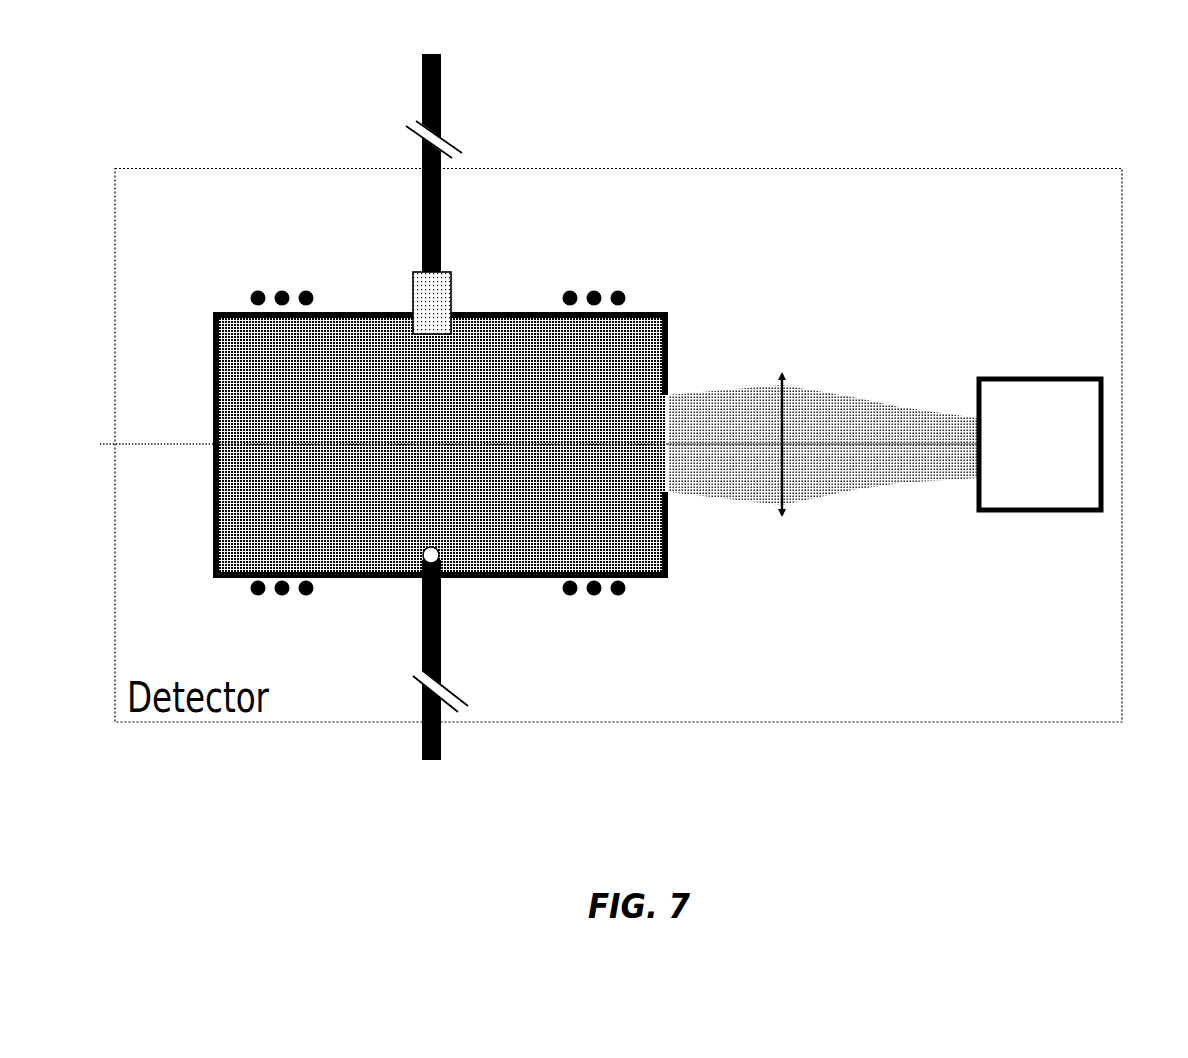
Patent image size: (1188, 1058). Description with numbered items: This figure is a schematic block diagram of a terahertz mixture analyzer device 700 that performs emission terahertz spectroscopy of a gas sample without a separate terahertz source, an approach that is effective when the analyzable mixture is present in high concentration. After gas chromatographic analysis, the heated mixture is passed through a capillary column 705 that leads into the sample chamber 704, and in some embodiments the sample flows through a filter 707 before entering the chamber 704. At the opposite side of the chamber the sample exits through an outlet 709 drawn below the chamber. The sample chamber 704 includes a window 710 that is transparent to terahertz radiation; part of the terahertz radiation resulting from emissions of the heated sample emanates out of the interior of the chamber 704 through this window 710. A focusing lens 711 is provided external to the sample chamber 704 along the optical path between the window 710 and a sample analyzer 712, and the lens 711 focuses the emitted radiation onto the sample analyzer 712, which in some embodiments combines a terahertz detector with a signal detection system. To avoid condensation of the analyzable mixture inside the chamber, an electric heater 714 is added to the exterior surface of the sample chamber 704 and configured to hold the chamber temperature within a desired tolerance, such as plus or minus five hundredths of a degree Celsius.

The device 700 is at (1022, 122).
The sample chamber 704 is at (227, 305).
The capillary column 705 is at (442, 130).
The filter 707 is at (452, 290).
The sample outlet pipe 709 is at (421, 746).
The window 710 is at (668, 410).
The focusing lens 711 is at (785, 372).
The sample analyzer 712 is at (1101, 377).
The heater 714 is at (622, 598).